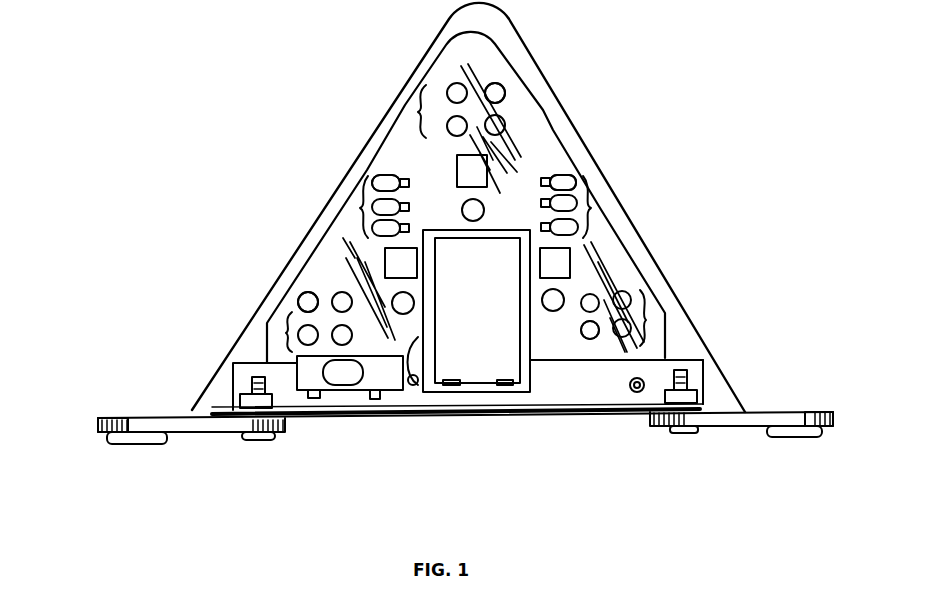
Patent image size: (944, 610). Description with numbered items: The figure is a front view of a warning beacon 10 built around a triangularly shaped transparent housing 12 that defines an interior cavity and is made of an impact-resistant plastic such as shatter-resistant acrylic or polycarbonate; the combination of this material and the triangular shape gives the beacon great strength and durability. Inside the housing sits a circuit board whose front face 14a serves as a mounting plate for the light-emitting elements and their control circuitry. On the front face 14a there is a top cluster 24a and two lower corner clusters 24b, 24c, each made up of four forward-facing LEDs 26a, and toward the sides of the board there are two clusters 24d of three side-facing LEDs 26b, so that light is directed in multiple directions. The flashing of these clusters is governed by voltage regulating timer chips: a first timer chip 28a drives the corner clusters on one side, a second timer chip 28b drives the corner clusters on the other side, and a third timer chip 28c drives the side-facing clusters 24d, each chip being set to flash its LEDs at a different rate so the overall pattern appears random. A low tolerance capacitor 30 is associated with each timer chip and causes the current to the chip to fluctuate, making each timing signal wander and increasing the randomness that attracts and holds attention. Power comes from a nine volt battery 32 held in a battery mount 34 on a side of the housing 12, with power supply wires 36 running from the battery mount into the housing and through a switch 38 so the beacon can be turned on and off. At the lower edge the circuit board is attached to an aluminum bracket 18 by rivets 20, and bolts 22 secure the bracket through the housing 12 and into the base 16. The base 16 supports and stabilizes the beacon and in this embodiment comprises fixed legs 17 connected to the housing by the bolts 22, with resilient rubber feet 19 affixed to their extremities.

The warning beacon 10 is at (734, 80).
The housing 12 is at (360, 162).
The front face of the circuit board 14a is at (547, 143).
The base 16 is at (152, 392).
The fixed legs 17 is at (100, 416).
The aluminum bracket 18 is at (663, 373).
The resilient rubber feet 19 is at (133, 443).
The rivets 20 is at (310, 394).
The bolts 22 is at (257, 437).
The top cluster 24a is at (415, 108).
The lower corner cluster 24b is at (282, 328).
The lower corner cluster 24c is at (648, 320).
The side-facing LED clusters 24d is at (355, 207).
The forward-facing LEDs 26a is at (500, 87).
The side-facing LEDs 26b is at (385, 178).
The first timer chip 28a is at (384, 264).
The second timer chip 28b is at (488, 155).
The third timer chip 28c is at (567, 262).
The low tolerance capacitor 30 is at (480, 205).
The 9 volt battery 32 is at (484, 307).
The battery mount 34 is at (468, 420).
The power supply wires 36 is at (408, 392).
The switch 38 is at (368, 386).